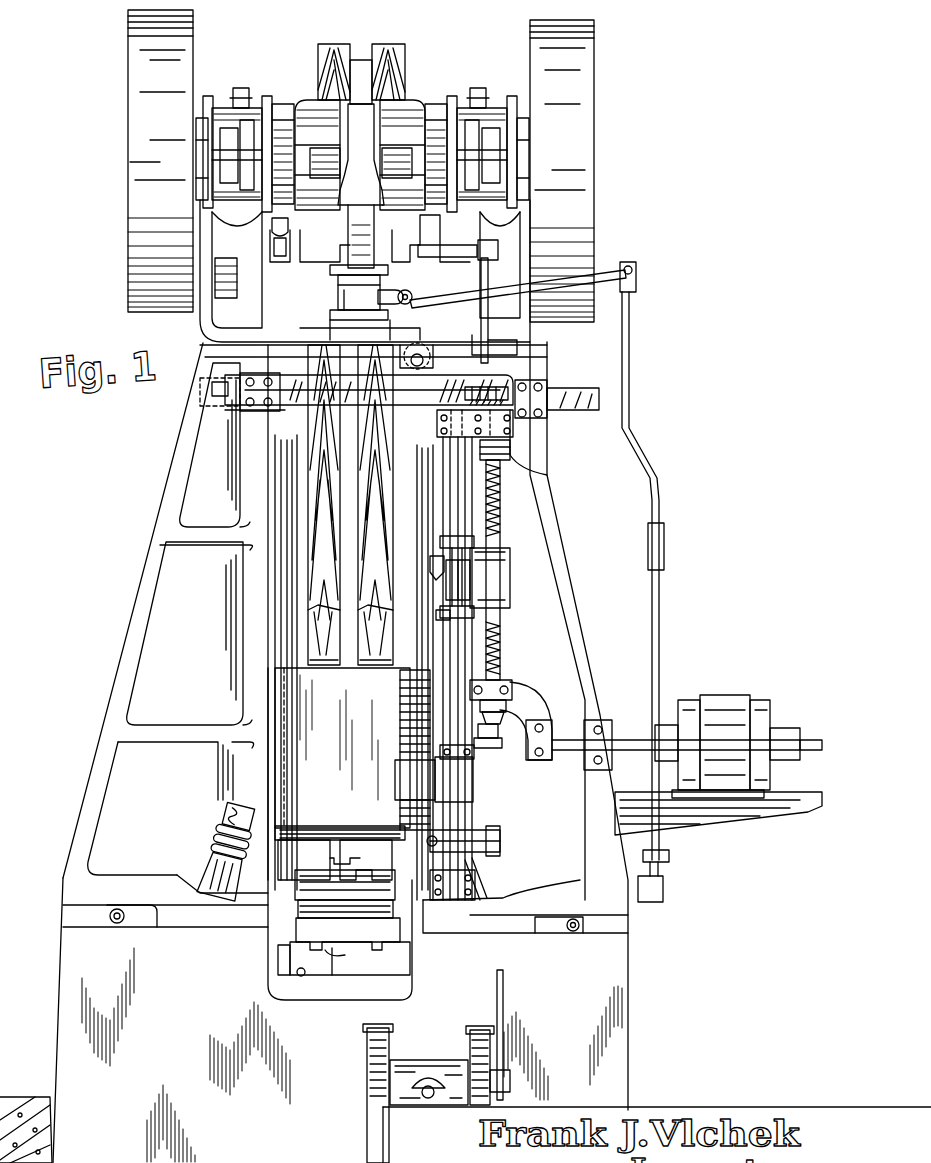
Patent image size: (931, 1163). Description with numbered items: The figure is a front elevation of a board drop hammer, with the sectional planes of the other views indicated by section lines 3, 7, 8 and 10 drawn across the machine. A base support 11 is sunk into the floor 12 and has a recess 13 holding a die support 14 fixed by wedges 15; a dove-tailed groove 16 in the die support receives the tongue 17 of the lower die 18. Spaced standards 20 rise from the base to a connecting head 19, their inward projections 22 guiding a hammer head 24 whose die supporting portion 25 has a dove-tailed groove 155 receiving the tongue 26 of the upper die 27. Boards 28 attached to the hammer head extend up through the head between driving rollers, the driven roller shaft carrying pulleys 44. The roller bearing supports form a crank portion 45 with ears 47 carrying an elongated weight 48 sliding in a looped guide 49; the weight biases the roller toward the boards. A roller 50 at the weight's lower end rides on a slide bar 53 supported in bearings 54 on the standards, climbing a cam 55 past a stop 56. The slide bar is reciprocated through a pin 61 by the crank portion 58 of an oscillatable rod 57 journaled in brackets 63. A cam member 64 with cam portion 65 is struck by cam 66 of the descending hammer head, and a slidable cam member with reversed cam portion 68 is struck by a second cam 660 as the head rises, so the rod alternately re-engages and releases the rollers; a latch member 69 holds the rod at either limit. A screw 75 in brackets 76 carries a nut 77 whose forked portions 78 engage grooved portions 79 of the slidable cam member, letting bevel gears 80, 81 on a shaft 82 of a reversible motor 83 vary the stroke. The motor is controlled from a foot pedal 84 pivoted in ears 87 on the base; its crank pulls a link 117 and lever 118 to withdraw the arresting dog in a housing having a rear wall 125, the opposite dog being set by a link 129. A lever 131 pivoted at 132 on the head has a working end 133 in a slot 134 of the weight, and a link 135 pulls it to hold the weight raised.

The section line 3- 3 is at (160, 162).
The section line 7- 7 is at (445, 517).
The section line 8- 8 is at (372, 748).
The section line 10- 10 is at (378, 844).
The base support 11 is at (617, 992).
The floor 12 is at (22, 1106).
The recess 13 is at (300, 978).
The die support 14 is at (333, 982).
The wedges 15 is at (290, 967).
The dove-tailed groove 16 is at (346, 952).
The tongue 17 is at (300, 953).
The die 18 is at (300, 931).
The connecting head 19 is at (216, 318).
The standards 20 is at (565, 582).
The projections 22 is at (284, 451).
The hammer head 24 is at (290, 701).
The die supporting portion 25 is at (340, 853).
The dove-tailed tongue 26 is at (366, 860).
The die 27 is at (345, 885).
The boards 28 is at (372, 48).
The pulleys 44 is at (136, 77).
The crank portion 45 is at (400, 128).
The ears 47 is at (327, 150).
The weight 48 is at (345, 328).
The looped guide 49 is at (340, 281).
The roller 50 is at (340, 384).
The slide bar 53 is at (285, 410).
The bearings 54 is at (248, 396).
The cam 55 is at (372, 392).
The stop 56 is at (412, 370).
The oscillatable rod 57 is at (470, 644).
The crank portion 58 is at (494, 386).
The pin 61 is at (466, 592).
The brackets 63 is at (462, 412).
The cam member 64 is at (472, 777).
The cam portion 65 is at (410, 780).
The cam 66 is at (410, 758).
The cam portion 68 is at (432, 568).
The latch member 69 is at (502, 841).
The screw 75 is at (506, 658).
The brackets 76 is at (512, 428).
The nut 77 is at (495, 583).
The forked portions 78 is at (505, 552).
The grooved portions 79 is at (440, 614).
The bevel gear 80 is at (488, 740).
The bevel gear 81 is at (552, 732).
The shaft 82 is at (594, 762).
The reversible motor 83 is at (712, 712).
The foot pedal 84 is at (440, 1064).
The ears 87 is at (366, 1051).
The link 117 is at (490, 330).
The lever 118 is at (434, 254).
The rear wall 125 is at (300, 272).
The link 129 is at (282, 262).
The lever 131 is at (603, 268).
The pivot 132 is at (407, 306).
The working end 133 is at (382, 287).
The slot 134 is at (338, 295).
The link 135 is at (658, 498).
The dove-tailed groove 155 is at (336, 858).
The second cam 660 is at (405, 680).